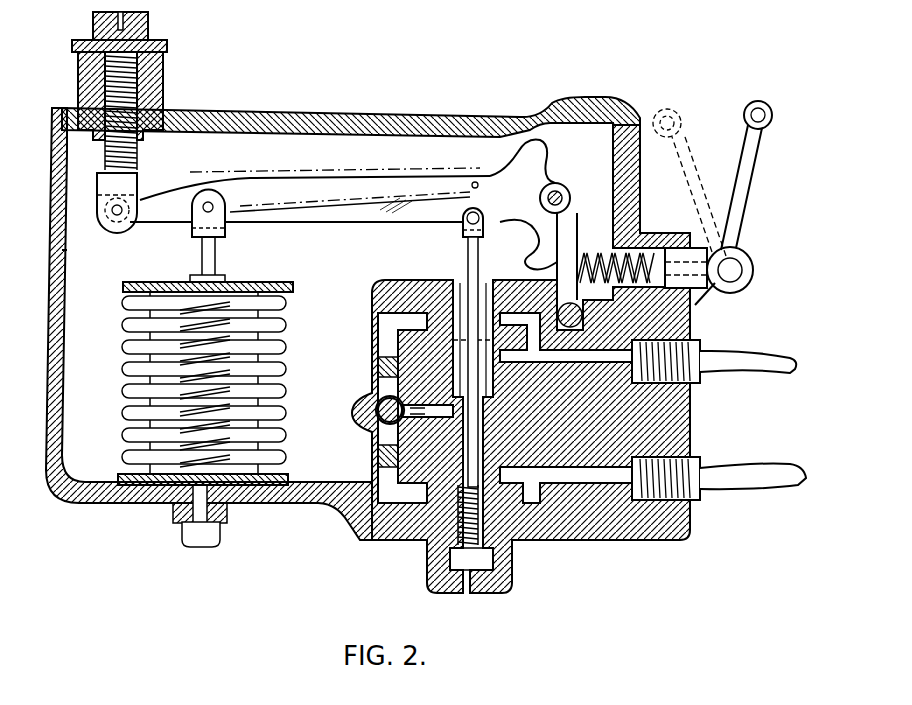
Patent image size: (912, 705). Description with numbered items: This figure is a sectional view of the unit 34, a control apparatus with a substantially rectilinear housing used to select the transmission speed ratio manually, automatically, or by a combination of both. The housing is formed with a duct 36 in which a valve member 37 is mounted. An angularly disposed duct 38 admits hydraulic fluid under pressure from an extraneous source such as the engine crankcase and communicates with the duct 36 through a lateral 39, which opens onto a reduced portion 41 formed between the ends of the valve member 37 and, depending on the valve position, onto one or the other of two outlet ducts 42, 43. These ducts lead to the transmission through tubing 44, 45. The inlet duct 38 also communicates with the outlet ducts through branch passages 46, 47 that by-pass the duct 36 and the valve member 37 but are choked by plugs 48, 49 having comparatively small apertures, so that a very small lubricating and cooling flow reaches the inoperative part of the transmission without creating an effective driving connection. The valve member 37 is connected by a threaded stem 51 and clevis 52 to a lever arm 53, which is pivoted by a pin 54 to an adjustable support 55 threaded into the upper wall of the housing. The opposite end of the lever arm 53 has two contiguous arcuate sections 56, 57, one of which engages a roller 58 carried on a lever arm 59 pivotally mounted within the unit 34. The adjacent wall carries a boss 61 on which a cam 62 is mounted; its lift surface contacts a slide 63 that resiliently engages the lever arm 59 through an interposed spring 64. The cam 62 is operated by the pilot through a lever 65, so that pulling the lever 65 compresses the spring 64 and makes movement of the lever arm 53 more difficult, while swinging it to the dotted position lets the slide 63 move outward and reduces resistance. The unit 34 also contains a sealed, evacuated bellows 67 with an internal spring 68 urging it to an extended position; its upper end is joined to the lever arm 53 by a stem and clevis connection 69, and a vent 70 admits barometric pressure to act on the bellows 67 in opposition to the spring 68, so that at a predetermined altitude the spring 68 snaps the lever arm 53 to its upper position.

The unit 34 is at (400, 108).
The duct 36 is at (455, 283).
The valve member 37 is at (493, 556).
The angularly disposed duct 38 is at (378, 406).
The lateral 39 is at (405, 425).
The reduced portion 41 is at (493, 417).
The outlet duct 42 is at (566, 352).
The outlet duct 43 is at (607, 468).
The tubing 44 is at (760, 350).
The tubing 45 is at (768, 471).
The branch passage 46 is at (378, 325).
The branch passage 47 is at (378, 497).
The plug 48 is at (378, 365).
The plug 49 is at (378, 467).
The threaded stem 51 is at (478, 251).
The clevis 52 is at (462, 228).
The lever arm 53 is at (370, 222).
The pin 54 is at (112, 222).
The adjustable support 55 is at (140, 172).
The arcuate section 56 is at (552, 184).
The arcuate section 57 is at (548, 266).
The roller 58 is at (568, 190).
The lever arm 59 is at (597, 243).
The boss 61 is at (709, 303).
The cam 62 is at (745, 263).
The slide 63 is at (683, 252).
The spring 64 is at (642, 205).
The lever 65 is at (750, 177).
The sealed bellows 67 is at (123, 347).
The spring 68 is at (248, 284).
The stem and clevis connection 69 is at (222, 237).
The vent 70 is at (70, 255).